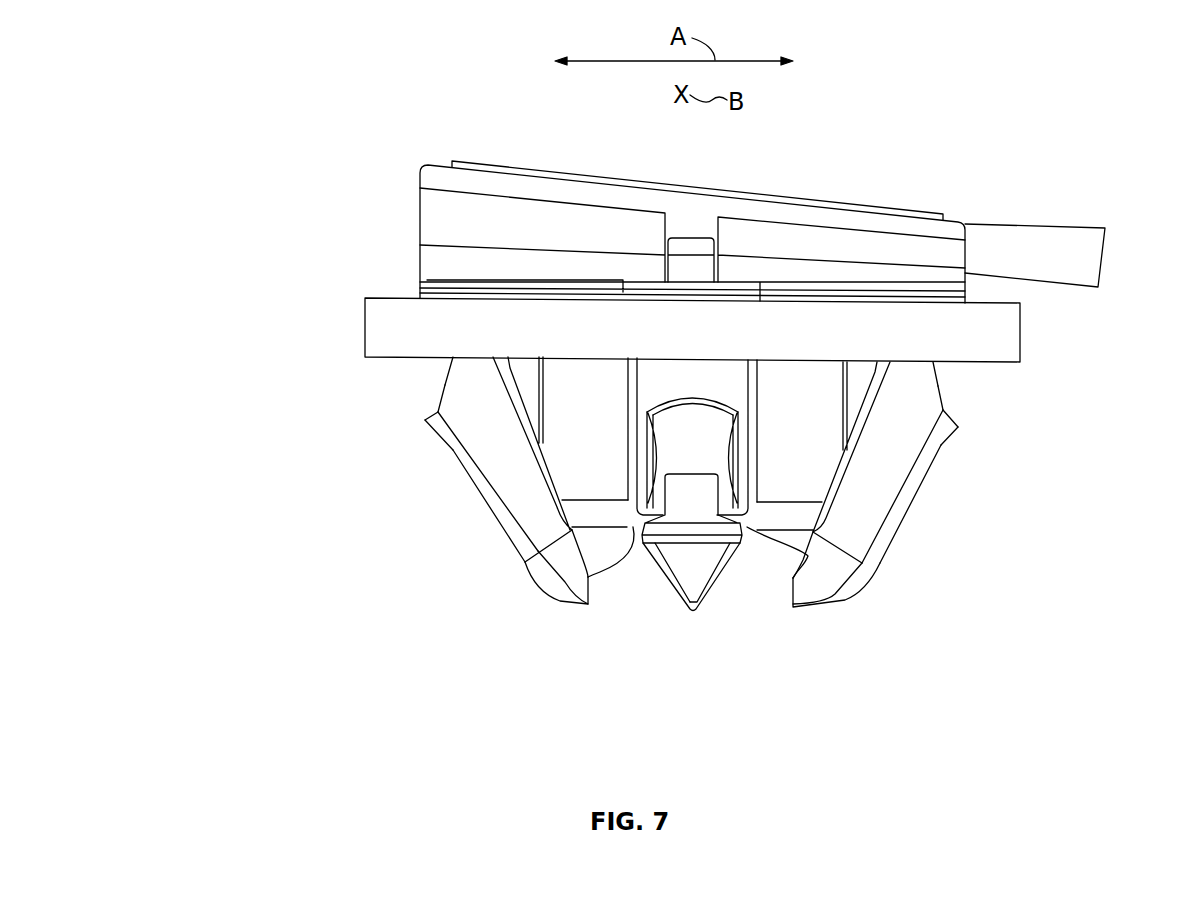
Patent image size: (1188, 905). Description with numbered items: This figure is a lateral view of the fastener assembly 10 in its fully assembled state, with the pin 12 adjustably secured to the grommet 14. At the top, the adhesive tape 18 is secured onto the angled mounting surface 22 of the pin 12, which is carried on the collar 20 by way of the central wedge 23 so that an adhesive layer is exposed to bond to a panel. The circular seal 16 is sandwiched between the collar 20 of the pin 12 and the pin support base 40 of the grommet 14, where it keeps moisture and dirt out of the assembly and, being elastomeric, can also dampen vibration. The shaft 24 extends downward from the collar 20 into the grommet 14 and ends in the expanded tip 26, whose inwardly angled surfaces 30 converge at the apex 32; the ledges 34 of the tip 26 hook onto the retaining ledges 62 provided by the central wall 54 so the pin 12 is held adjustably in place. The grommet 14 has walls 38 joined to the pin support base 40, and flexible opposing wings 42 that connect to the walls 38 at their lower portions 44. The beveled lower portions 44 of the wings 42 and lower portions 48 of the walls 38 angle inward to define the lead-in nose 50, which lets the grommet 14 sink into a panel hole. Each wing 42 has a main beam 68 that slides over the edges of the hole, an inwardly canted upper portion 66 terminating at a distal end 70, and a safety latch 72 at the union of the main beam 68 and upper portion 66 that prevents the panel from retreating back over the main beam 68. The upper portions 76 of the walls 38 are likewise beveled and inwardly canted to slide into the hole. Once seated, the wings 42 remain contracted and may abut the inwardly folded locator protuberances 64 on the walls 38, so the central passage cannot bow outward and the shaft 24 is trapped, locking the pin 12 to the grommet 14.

The fastener assembly 10 is at (250, 78).
The pin 12 is at (403, 240).
The grommet 14 is at (420, 514).
The seal 16 is at (1038, 321).
The adhesive tape 18 is at (1040, 257).
The collar 20 is at (490, 290).
The mounting surface 22 is at (553, 187).
The central wedge 23 is at (700, 240).
The shaft 24 is at (747, 558).
The tip 26 is at (715, 582).
The inwardly angled surfaces 30 is at (683, 567).
The apex 32 is at (697, 612).
The ledges 34 is at (835, 593).
The walls 38 is at (597, 448).
The pin support base 40 is at (572, 358).
The wings 42 is at (453, 450).
The lower portions of the wings 44 is at (530, 568).
The lower portions of the walls 48 is at (585, 575).
The lead-in nose 50 is at (536, 607).
The central wall 54 is at (692, 380).
The retaining ledges 62 is at (647, 412).
The locator protuberances 64 is at (439, 406).
The upper portions of the wings 66 is at (441, 397).
The main beams 68 is at (455, 473).
The distal ends of the upper portions 70 is at (453, 363).
The safety latches 72 is at (427, 422).
The upper portions of the walls 76 is at (752, 393).